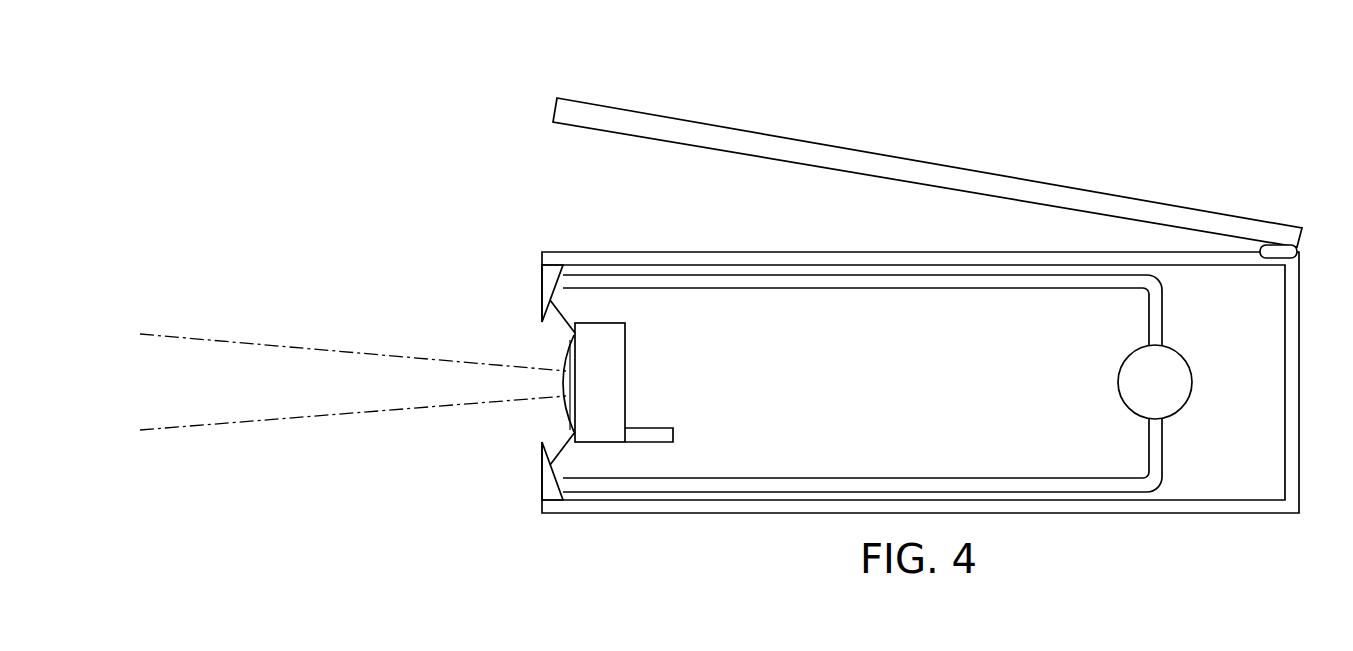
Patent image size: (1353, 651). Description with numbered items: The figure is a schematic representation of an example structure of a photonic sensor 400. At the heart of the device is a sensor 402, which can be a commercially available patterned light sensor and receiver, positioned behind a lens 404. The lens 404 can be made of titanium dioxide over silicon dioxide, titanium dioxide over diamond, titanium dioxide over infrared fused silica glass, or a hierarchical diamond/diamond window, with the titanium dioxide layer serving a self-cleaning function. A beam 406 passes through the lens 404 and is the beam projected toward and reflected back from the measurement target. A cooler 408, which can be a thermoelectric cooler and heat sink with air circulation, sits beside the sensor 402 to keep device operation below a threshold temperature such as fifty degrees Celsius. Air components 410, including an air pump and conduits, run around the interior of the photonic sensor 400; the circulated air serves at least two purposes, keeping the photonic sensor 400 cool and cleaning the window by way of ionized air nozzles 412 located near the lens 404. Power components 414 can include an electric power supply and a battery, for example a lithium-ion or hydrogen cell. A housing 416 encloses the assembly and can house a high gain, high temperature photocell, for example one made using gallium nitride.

The photonic sensor 400 is at (435, 101).
The sensor 402 is at (627, 358).
The lens 404 is at (560, 407).
The beam 406 is at (282, 419).
The cooler 408 is at (648, 428).
The air components 410 is at (853, 290).
The ionized air nozzles 412 is at (540, 282).
The power components 414 is at (1282, 245).
The housing 416 is at (975, 170).